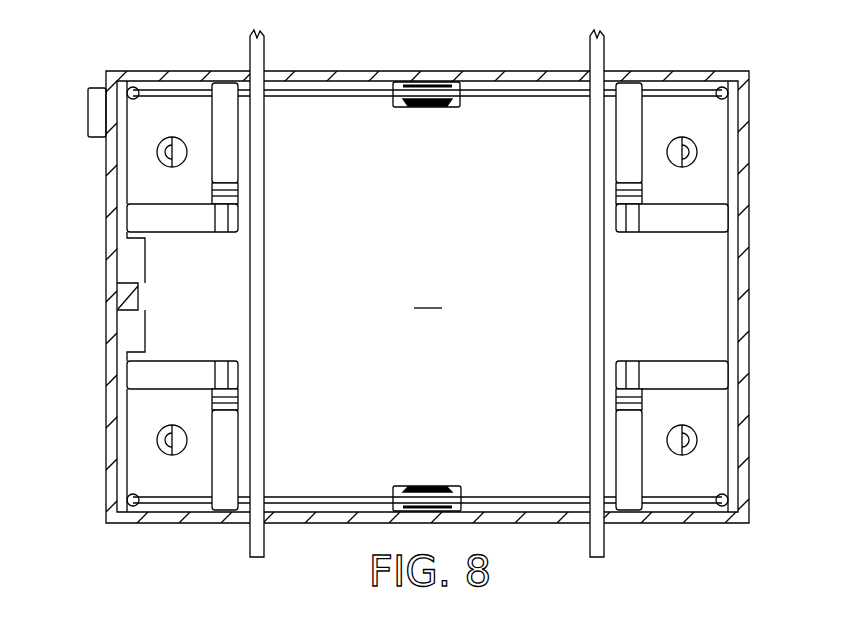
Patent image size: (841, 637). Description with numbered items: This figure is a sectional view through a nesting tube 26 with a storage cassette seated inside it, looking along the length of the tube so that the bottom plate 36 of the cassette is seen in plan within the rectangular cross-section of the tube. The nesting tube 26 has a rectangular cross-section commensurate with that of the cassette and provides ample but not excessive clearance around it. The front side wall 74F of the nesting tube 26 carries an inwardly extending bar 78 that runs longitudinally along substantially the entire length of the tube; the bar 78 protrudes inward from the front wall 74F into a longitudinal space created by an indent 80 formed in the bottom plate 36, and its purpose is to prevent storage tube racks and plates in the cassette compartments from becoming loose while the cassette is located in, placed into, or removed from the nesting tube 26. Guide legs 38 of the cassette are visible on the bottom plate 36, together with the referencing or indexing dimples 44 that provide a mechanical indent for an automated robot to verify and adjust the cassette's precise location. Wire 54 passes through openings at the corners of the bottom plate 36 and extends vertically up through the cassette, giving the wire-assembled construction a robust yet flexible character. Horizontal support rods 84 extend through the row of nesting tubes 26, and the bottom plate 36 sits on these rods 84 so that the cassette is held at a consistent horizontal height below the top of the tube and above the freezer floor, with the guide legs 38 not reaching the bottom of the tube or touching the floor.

The nesting tube 26 is at (752, 103).
The bottom plate 36 is at (428, 296).
The guide legs 38 is at (180, 222).
The referencing or indexing dimples 44 is at (445, 84).
The wire 54 is at (374, 91).
The front side wall 74F is at (107, 214).
The bar 78 is at (130, 298).
The indent 80 is at (144, 340).
The horizontal support rods 84 is at (254, 54).